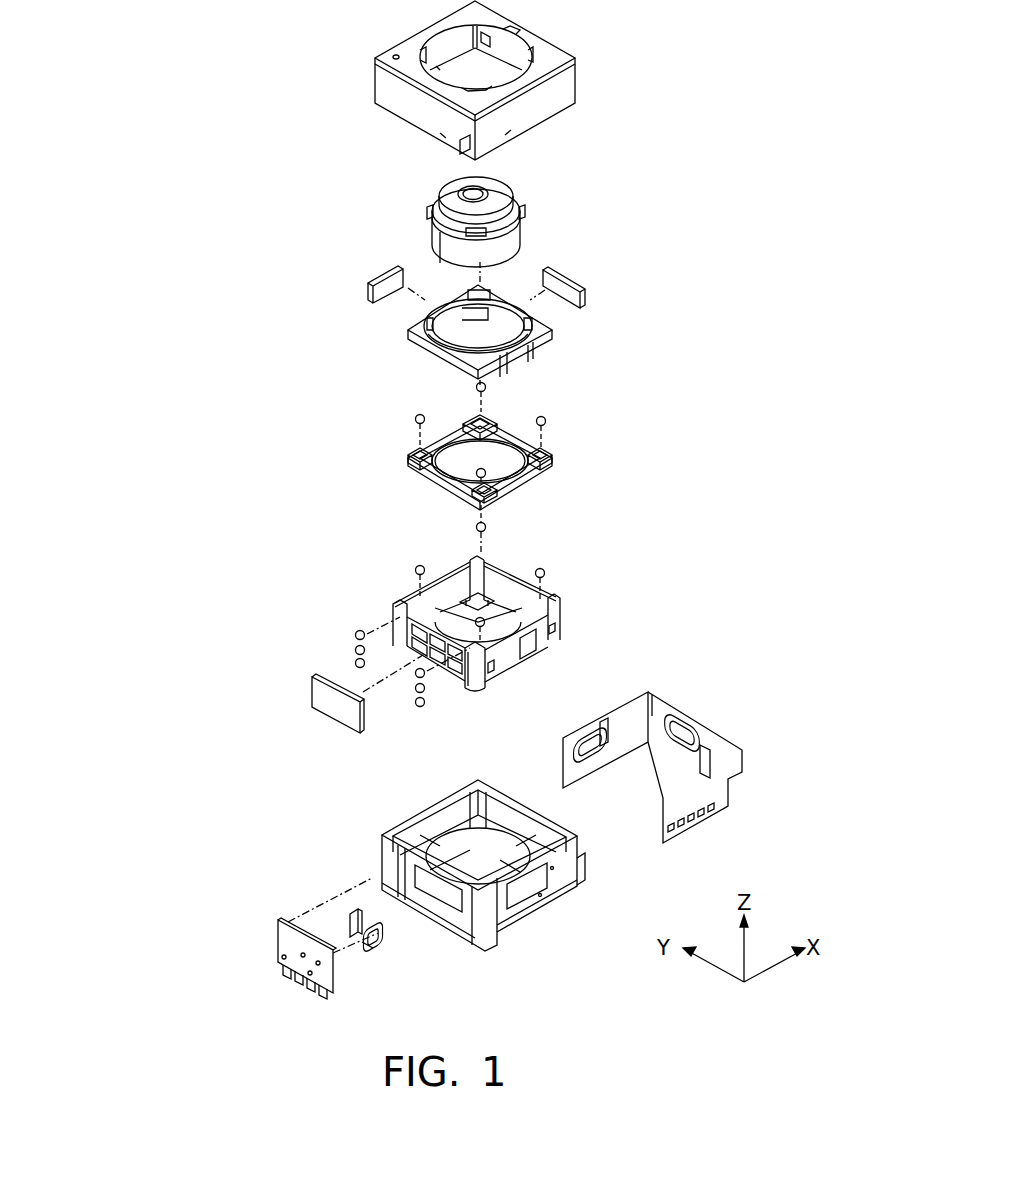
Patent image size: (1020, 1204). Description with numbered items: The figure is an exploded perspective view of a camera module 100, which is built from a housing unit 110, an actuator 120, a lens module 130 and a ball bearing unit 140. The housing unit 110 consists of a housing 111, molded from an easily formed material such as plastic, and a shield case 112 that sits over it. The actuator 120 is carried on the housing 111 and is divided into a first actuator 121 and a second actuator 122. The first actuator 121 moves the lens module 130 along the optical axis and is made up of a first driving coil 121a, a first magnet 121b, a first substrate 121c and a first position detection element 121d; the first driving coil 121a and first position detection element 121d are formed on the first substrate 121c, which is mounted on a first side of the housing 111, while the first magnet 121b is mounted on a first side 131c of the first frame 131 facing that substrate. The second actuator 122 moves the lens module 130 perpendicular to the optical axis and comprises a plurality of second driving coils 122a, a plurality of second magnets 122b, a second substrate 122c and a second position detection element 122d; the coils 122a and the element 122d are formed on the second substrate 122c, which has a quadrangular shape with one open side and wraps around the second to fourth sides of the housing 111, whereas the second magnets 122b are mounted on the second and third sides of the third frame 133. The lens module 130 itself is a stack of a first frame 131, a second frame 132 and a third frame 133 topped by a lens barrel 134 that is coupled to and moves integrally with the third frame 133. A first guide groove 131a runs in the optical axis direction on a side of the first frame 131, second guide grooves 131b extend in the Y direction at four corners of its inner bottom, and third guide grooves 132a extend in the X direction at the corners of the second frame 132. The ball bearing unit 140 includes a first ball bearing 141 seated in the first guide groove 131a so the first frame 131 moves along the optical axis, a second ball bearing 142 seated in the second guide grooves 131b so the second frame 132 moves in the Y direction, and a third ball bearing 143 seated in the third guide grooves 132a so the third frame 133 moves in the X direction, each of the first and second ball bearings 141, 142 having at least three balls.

The camera module 100 is at (763, 164).
The housing unit 110 is at (108, 0).
The housing 111 is at (535, 978).
The shield case 112 is at (390, 88).
The actuator 120 is at (172, 128).
The first actuator 121 is at (108, 88).
The first driving coil 121a is at (430, 983).
The first magnet 121b is at (336, 712).
The first substrate 121c is at (272, 940).
The first position detection element 121d is at (346, 918).
The second actuator 122 is at (108, 218).
The second driving coil 122a is at (585, 735).
The second magnet 122b is at (381, 287).
The second substrate 122c is at (610, 862).
The second position detection element 122d is at (692, 712).
The lens module 130 is at (108, 370).
The first frame 131 is at (636, 593).
The first guide groove 131a is at (468, 676).
The second guide groove 131b is at (486, 598).
The first side of the first frame 131c is at (425, 647).
The second frame 132 is at (612, 489).
The third guide groove 132a is at (549, 456).
The third frame 133 is at (420, 346).
The lens barrel 134 is at (438, 242).
The ball bearing unit 140 is at (108, 520).
The first ball bearing 141 is at (355, 637).
The second ball bearing 142 is at (418, 566).
The third ball bearing 143 is at (420, 416).